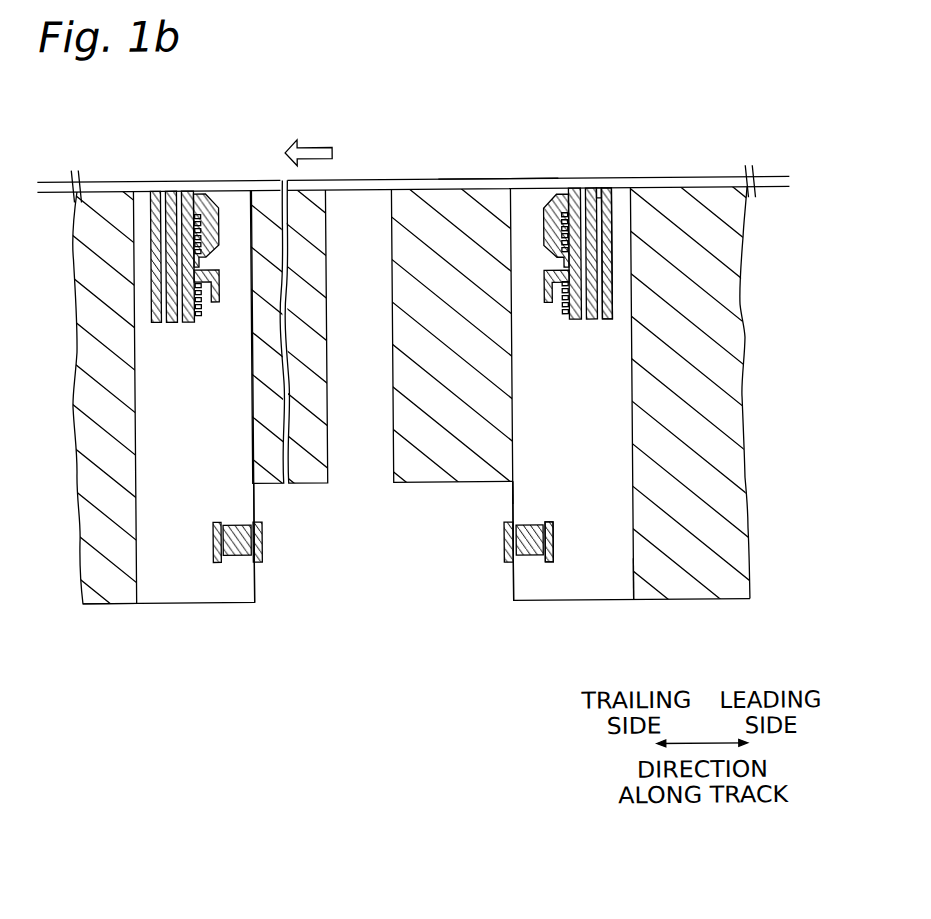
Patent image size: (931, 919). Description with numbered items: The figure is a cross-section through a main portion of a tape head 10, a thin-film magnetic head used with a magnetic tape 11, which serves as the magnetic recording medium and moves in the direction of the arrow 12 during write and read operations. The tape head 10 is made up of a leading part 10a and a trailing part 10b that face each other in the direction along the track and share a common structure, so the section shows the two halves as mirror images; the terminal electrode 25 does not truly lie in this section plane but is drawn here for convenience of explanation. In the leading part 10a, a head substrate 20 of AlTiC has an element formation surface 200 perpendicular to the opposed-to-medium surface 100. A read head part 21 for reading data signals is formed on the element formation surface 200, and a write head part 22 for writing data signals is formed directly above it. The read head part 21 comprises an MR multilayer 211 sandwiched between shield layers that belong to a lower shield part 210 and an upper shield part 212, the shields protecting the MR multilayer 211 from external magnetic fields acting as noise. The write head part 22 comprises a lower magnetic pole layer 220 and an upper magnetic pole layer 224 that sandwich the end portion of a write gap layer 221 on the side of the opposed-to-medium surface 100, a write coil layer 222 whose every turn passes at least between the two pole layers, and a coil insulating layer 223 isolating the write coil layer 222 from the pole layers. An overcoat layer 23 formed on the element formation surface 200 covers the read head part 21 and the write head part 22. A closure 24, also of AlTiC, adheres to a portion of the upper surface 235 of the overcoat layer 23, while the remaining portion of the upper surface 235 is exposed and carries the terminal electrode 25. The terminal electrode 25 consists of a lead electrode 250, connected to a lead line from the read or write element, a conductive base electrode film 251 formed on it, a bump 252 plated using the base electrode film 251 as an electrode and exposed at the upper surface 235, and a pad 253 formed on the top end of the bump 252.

The tape head 10 is at (415, 468).
The leading part 10a is at (509, 595).
The trailing part 10b is at (255, 585).
The magnetic tape 11 is at (239, 184).
The arrow 12 is at (315, 146).
The head substrate 20 is at (91, 515).
The read head part 21 is at (167, 176).
The write head part 22 is at (197, 176).
The overcoat layer 23 is at (248, 495).
The closure 24 is at (307, 475).
The terminal electrode 25 is at (235, 560).
The opposed-to-medium surface 100 is at (521, 181).
The element formation surface 200 is at (626, 590).
The lower shield part 210 is at (629, 191).
The MR multilayer 211 is at (615, 191).
The upper shield part 212 is at (609, 191).
The lower magnetic pole layer 220 is at (593, 193).
The write gap layer 221 is at (573, 193).
The write coil layer 222 is at (554, 192).
The coil insulating layer 223 is at (553, 195).
The upper magnetic pole layer 224 is at (546, 197).
The upper surface 235 is at (513, 490).
The lead electrode 250 is at (545, 555).
The base electrode film 251 is at (545, 540).
The bump 252 is at (527, 537).
The pad 253 is at (500, 527).